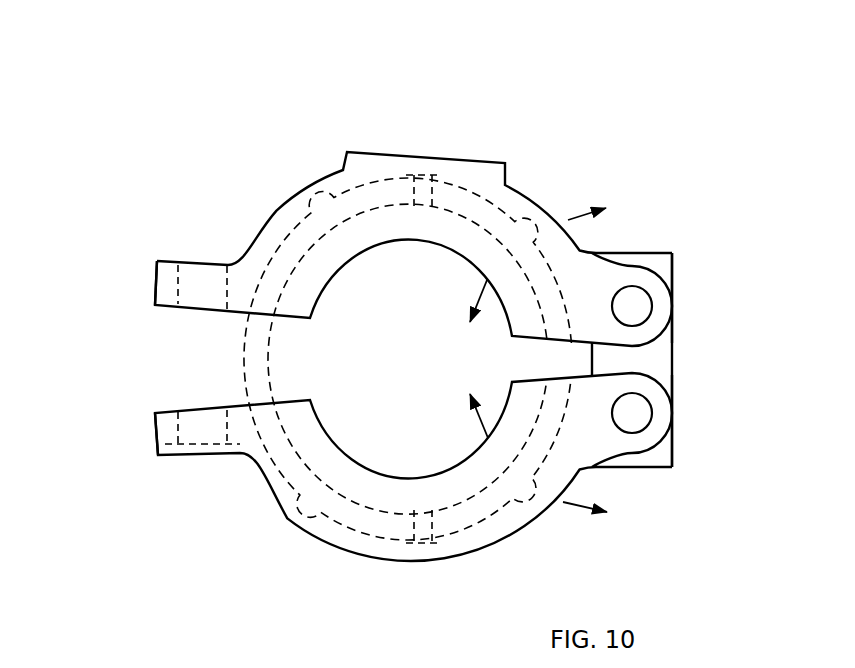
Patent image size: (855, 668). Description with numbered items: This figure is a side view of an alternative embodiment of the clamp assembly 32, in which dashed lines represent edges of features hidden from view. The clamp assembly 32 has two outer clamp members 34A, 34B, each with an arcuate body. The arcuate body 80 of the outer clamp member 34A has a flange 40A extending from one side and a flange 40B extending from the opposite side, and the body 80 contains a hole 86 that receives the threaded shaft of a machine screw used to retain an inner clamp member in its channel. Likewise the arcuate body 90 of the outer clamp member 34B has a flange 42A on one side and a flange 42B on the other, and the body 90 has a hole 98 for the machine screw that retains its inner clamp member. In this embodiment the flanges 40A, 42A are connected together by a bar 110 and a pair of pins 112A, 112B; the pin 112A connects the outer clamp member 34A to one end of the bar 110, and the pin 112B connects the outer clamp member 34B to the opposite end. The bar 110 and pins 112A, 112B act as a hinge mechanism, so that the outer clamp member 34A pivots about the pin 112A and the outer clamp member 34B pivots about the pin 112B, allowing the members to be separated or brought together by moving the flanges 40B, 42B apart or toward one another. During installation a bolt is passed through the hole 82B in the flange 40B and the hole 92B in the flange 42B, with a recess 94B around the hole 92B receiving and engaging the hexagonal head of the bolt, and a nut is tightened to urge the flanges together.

The clamp assembly 32 is at (628, 57).
The outer clamp member 34A is at (671, 144).
The outer clamp member 34B is at (671, 556).
The arcuate body 80 is at (520, 188).
The hole 86 is at (423, 170).
The arcuate body 90 is at (517, 532).
The hole 98 is at (428, 548).
The bar 110 is at (632, 253).
The pin 112A is at (646, 291).
The pin 112B is at (647, 428).
The flange 40A is at (672, 302).
The flange 42A is at (672, 407).
The flange 40B is at (155, 280).
The flange 42B is at (155, 436).
The hole 82B is at (203, 260).
The recess 94B is at (180, 457).
The hole 92B is at (208, 452).